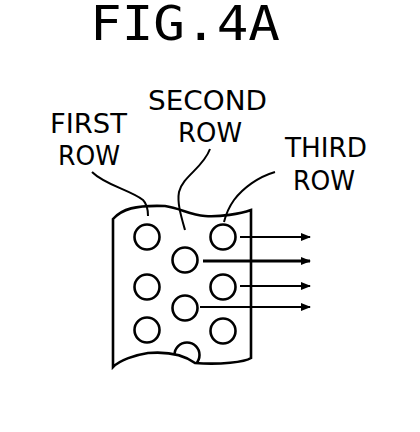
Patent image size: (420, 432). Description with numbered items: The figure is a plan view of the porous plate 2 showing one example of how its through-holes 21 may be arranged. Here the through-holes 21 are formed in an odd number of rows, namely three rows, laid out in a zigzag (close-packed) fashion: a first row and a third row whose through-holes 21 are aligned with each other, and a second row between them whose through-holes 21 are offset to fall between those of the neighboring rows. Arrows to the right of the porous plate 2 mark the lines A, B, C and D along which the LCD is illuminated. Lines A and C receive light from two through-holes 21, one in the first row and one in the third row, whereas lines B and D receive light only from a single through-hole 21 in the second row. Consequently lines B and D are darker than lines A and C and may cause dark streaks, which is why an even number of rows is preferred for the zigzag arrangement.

The porous plate 2 is at (122, 327).
The through-holes 21 is at (133, 239).
The line A is at (286, 238).
The line B is at (268, 263).
The line C is at (286, 288).
The line D is at (267, 311).